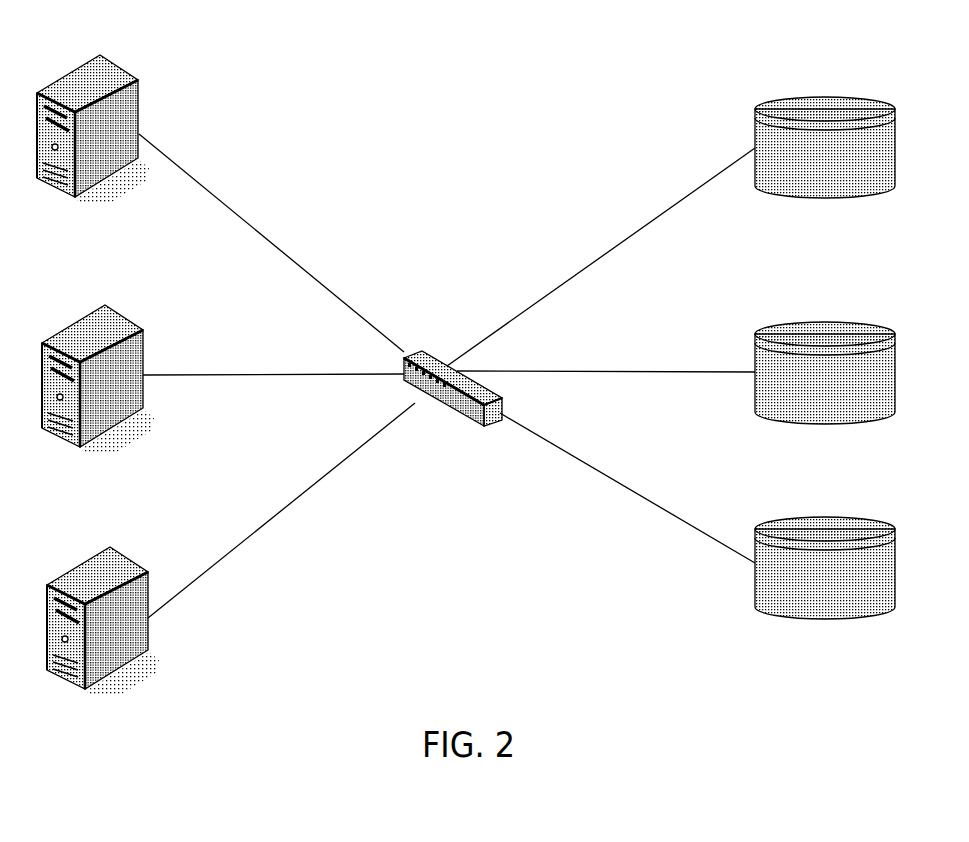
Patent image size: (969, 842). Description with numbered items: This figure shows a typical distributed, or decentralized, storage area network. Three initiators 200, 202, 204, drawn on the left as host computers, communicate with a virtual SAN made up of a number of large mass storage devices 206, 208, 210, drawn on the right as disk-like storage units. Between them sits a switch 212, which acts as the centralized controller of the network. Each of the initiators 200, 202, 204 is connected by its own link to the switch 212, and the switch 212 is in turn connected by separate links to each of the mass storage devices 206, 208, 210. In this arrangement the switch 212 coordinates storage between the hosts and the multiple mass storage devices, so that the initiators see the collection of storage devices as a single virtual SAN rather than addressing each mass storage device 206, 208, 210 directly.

The initiator 200 is at (111, 120).
The initiator 202 is at (116, 369).
The initiator 204 is at (121, 613).
The mass storage device 206 is at (825, 118).
The mass storage device 208 is at (825, 344).
The mass storage device 210 is at (825, 539).
The switch 212 is at (453, 362).